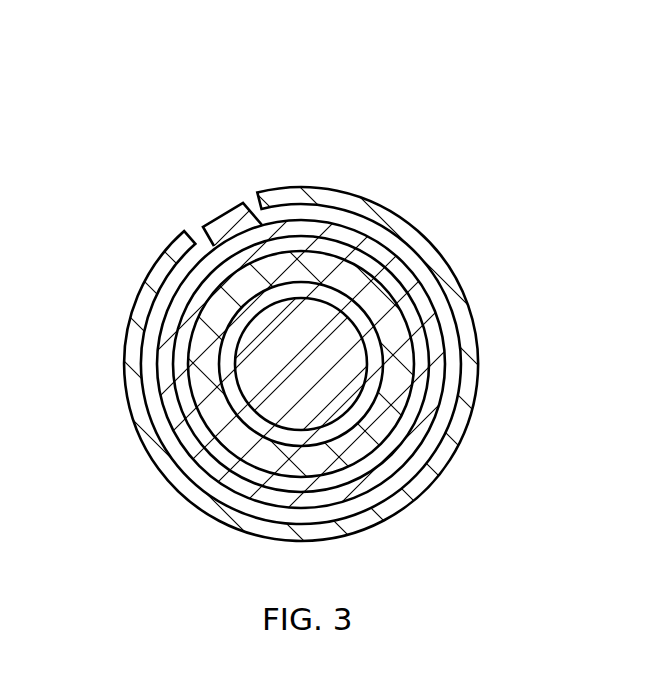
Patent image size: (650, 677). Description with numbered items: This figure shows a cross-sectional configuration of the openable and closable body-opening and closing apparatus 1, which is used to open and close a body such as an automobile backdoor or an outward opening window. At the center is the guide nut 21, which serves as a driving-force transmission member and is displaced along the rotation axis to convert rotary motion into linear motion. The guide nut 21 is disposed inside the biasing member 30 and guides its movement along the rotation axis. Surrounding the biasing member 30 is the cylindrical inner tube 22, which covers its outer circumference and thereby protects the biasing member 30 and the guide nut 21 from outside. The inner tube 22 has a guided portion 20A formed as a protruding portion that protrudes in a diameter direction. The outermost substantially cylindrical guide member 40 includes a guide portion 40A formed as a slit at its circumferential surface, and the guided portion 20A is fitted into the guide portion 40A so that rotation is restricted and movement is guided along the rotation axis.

The openable and closable body-opening and closing apparatus 1 is at (551, 122).
The guide nut 21 is at (325, 370).
The inner tube 22 is at (281, 229).
The biasing member 30 is at (374, 288).
The guide member 40 is at (130, 307).
The guide portion 40A is at (185, 219).
The guided portion 20A is at (228, 203).